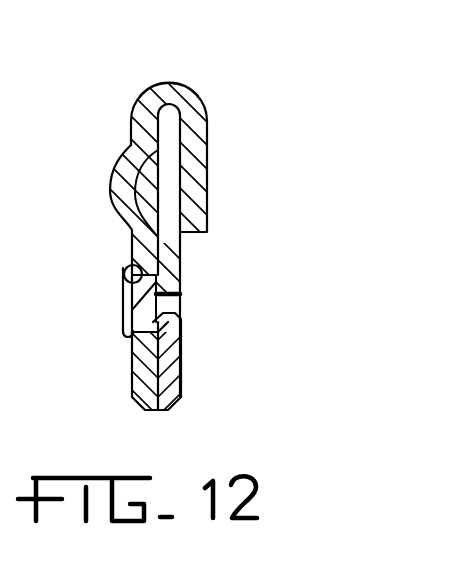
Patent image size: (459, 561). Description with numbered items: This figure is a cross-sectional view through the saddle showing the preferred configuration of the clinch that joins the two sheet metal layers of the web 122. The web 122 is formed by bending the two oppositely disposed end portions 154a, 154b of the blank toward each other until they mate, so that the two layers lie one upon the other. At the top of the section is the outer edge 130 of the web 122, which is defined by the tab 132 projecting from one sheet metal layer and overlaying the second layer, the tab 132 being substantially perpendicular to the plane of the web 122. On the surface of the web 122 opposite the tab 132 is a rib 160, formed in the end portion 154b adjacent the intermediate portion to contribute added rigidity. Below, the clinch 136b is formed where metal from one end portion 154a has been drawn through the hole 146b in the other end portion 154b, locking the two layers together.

The web 122 is at (175, 215).
The outer edge 130 is at (175, 85).
The tab 132 is at (208, 177).
The rib 160 is at (117, 179).
The hole 146b is at (125, 267).
The clinch 136b is at (123, 328).
The end portion 154a is at (181, 366).
The end portion 154b is at (138, 365).